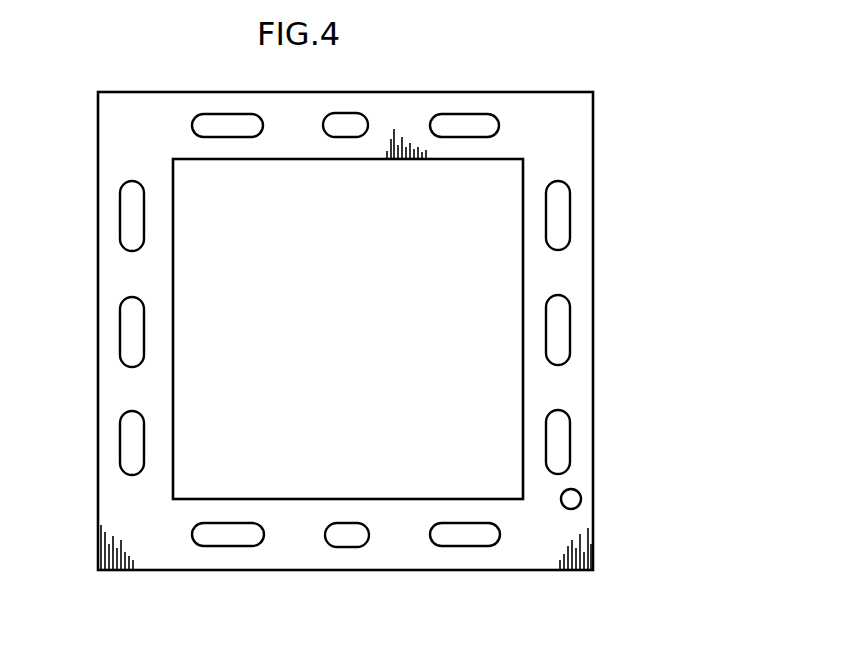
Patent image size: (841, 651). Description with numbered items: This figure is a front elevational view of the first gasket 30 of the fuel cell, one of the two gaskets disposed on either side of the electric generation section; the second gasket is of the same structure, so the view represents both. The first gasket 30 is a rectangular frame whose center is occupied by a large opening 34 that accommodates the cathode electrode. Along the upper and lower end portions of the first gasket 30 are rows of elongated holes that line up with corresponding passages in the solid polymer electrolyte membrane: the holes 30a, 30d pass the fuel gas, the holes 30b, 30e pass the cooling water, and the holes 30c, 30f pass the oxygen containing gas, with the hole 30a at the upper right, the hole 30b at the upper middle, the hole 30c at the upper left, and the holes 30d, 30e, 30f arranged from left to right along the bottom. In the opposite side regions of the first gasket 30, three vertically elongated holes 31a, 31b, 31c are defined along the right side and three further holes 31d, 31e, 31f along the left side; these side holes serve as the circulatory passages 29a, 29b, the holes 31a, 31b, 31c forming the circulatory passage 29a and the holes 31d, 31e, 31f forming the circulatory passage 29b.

The first gasket 30 is at (547, 84).
The large opening 34 is at (408, 315).
The hole 30a is at (473, 123).
The hole 30b is at (350, 124).
The hole 30c is at (227, 124).
The hole 30d is at (237, 540).
The hole 30e is at (353, 544).
The hole 30f is at (470, 540).
The hole 31a is at (563, 214).
The hole 31b is at (563, 320).
The hole 31c is at (565, 443).
The hole 31d is at (130, 208).
The hole 31e is at (130, 314).
The hole 31f is at (125, 443).
The circulatory passage 29a is at (547, 212).
The circulatory passage 29b is at (145, 340).